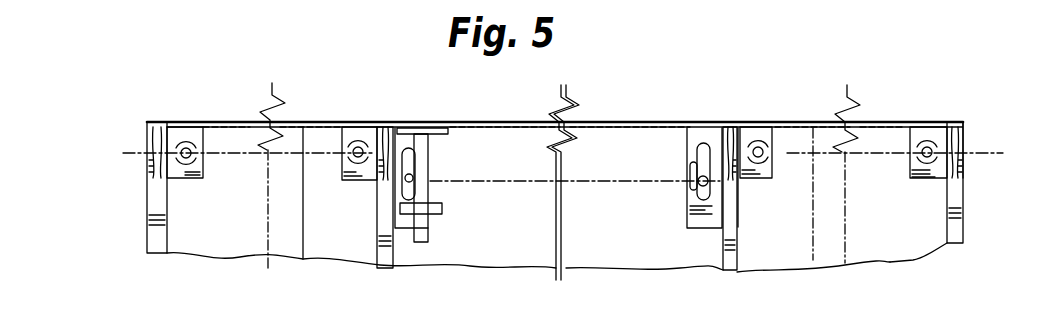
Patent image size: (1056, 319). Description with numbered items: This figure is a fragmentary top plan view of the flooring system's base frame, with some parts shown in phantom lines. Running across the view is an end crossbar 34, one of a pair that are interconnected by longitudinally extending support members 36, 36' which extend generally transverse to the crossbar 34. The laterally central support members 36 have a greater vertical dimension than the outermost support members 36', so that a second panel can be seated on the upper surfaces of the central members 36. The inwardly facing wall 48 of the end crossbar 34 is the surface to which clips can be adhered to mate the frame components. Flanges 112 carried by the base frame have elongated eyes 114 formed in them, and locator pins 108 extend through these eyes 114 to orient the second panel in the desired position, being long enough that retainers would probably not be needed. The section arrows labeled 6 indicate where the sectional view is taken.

The section line 6- 6 is at (147, 153).
The end crossbar 34 is at (348, 120).
The support member 36 is at (537, 198).
The outermost support member 36' is at (545, 187).
The inwardly facing wall 48 is at (873, 127).
The locator pin 108 is at (397, 180).
The flange 112 is at (400, 140).
The elongated eye 114 is at (413, 195).